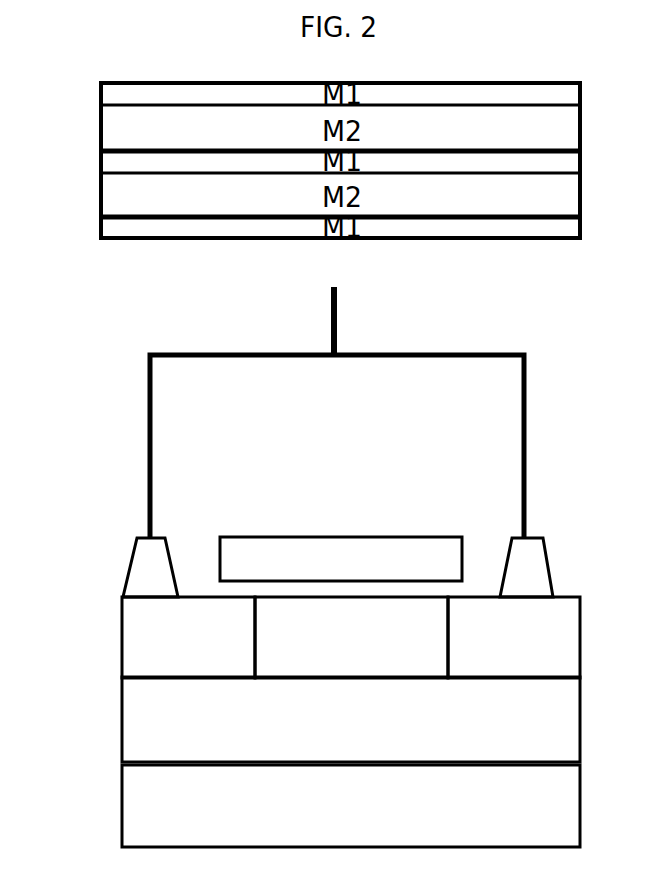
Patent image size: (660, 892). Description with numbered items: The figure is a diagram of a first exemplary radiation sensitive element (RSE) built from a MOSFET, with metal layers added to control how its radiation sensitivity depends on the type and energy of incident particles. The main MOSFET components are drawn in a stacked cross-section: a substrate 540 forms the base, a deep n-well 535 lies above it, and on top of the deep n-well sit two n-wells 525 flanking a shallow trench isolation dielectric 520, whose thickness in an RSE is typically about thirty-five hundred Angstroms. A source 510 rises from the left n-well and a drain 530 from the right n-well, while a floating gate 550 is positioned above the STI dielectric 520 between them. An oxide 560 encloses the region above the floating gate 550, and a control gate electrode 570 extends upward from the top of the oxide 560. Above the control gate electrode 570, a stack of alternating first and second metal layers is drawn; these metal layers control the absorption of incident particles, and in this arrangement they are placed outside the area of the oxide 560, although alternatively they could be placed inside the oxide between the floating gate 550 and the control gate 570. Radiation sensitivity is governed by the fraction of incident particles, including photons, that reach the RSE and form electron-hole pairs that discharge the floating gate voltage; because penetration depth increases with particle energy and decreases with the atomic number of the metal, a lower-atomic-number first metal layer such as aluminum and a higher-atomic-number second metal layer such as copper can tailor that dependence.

The source 510 is at (153, 570).
The shallow trench isolation (STI) dielectric 520 is at (375, 652).
The n-wells (NW) 525 is at (212, 652).
The drain 530 is at (533, 530).
The deep n-well (DNW) 535 is at (375, 736).
The substrate (SUB) 540 is at (376, 819).
The floating gate (FG) 550 is at (365, 573).
The oxide 560 is at (490, 442).
The control gate (CG) electrode 570 is at (332, 287).